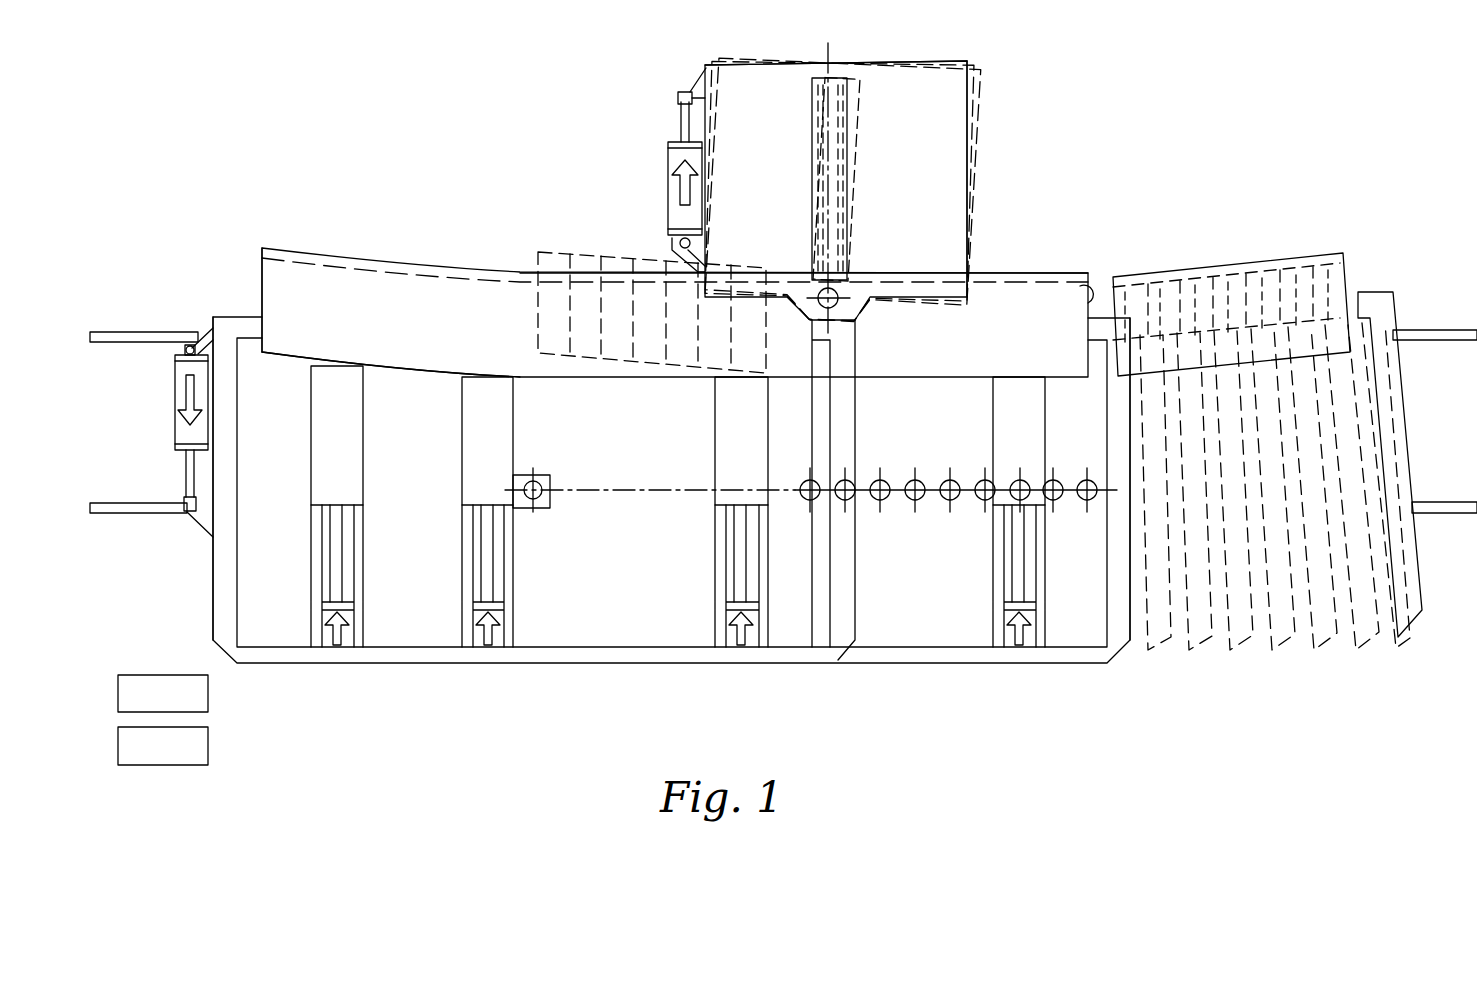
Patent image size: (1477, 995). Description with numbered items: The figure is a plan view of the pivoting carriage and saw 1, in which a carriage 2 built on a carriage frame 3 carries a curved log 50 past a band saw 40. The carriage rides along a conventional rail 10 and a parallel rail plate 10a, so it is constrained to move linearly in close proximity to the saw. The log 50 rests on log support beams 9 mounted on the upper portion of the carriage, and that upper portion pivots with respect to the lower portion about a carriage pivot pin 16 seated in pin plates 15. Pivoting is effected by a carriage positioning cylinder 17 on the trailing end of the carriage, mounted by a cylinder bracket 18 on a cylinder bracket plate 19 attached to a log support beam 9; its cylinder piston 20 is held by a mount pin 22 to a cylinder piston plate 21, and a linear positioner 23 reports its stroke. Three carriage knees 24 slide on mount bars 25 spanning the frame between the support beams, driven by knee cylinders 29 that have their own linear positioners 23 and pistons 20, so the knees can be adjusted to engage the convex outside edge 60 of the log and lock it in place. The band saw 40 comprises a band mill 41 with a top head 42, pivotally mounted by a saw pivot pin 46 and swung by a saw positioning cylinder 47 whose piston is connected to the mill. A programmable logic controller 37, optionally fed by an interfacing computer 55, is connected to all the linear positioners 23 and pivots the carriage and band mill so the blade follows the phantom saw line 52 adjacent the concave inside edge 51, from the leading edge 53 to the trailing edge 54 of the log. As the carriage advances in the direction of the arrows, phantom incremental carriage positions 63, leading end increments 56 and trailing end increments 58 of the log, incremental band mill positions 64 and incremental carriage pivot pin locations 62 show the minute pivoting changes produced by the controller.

The pivoting carriage and saw 1 is at (1103, 240).
The carriage 2 is at (405, 672).
The carriage frame 3 is at (598, 668).
The log support beams 9 is at (240, 330).
The rail 10 is at (112, 500).
The rail plate 10a is at (125, 338).
The pin plates 15 is at (553, 478).
The carriage pivot pin 16 is at (540, 500).
The carriage positioning cylinder 17 is at (172, 383).
The cylinder bracket 18 is at (186, 352).
The cylinder bracket plate 19 is at (205, 325).
The cylinder piston 20 is at (188, 470).
The cylinder piston plate 21 is at (203, 520).
The mount pin 22 is at (190, 345).
The linear positioner 23 is at (197, 400).
The carriage knees 24 is at (458, 422).
The mount bars 25 is at (516, 600).
The knee cylinders 29 is at (366, 620).
The programmable logic controller 37 is at (212, 702).
The band saw 40 is at (1015, 152).
The band mill 41 is at (975, 215).
The top head 42 is at (835, 160).
The saw pivot pin 46 is at (840, 290).
The saw positioning cylinder 47 is at (665, 200).
The log 50 is at (375, 255).
The inside edge 51 is at (490, 272).
The saw line 52 is at (492, 284).
The leading edge 53 is at (1348, 275).
The trailing edge 54 is at (262, 278).
The computer 55 is at (212, 756).
The leading end increments 56 is at (1130, 262).
The trailing end increments 58 is at (600, 248).
The outside edge 60 is at (392, 378).
The incremental carriage pivot pin locations 62 is at (978, 502).
The incremental carriage positions 63 is at (1282, 635).
The incremental band mill positions 64 is at (980, 95).